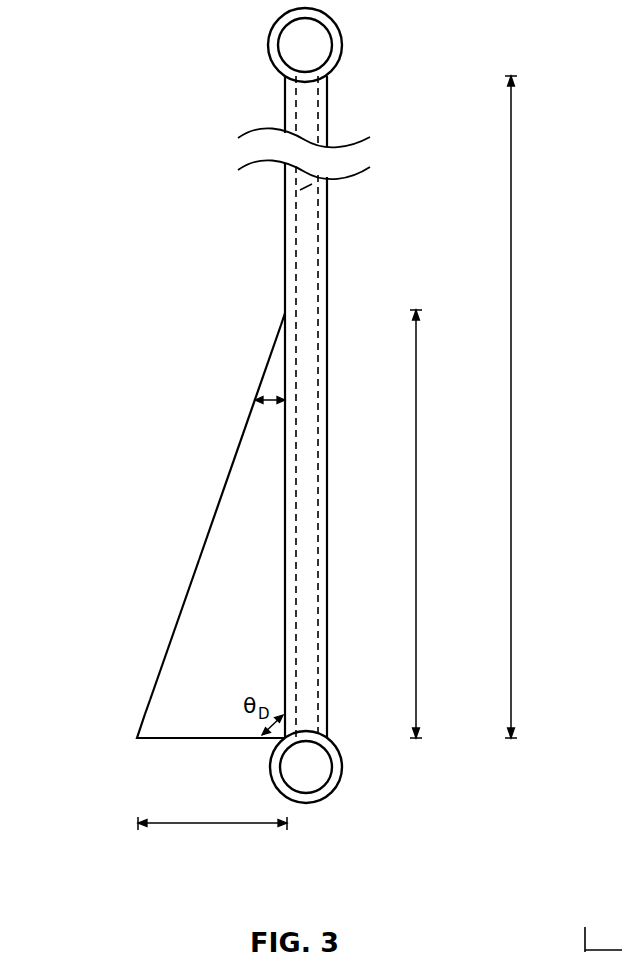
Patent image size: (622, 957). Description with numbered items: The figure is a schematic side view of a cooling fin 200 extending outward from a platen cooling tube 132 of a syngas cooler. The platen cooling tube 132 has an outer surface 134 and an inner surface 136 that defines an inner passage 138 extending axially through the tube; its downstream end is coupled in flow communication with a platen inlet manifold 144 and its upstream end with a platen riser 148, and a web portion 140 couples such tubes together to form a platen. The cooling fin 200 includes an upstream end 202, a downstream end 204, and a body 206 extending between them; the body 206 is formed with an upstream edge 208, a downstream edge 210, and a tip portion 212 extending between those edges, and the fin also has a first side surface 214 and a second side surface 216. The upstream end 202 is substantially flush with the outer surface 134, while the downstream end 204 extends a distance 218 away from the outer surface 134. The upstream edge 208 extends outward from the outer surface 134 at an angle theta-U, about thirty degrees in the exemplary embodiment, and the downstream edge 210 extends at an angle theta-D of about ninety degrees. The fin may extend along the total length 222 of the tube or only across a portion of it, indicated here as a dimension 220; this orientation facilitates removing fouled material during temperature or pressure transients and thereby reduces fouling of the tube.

The platen cooling tube 132 is at (312, 407).
The outer surface 134 is at (305, 260).
The inner surface 136 is at (318, 285).
The inner passage 138 is at (305, 184).
The web portion 140 is at (620, 945).
The platen inlet manifold 144 is at (307, 804).
The platen riser 148 is at (342, 47).
The cooling fin 200 is at (165, 539).
The upstream end 202 is at (278, 305).
The downstream end 204 is at (130, 770).
The body 206 is at (208, 525).
The upstream edge 208 is at (187, 603).
The downstream edge 210 is at (212, 740).
The tip portion 212 is at (135, 738).
The first side surface 214 is at (170, 683).
The second side surface 216 is at (253, 438).
The distance 218 is at (212, 824).
The strut height 220 is at (417, 525).
The total length 222 is at (512, 408).